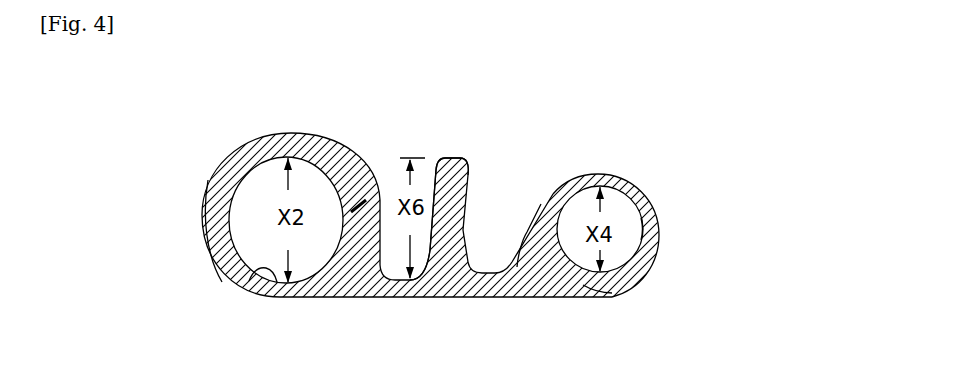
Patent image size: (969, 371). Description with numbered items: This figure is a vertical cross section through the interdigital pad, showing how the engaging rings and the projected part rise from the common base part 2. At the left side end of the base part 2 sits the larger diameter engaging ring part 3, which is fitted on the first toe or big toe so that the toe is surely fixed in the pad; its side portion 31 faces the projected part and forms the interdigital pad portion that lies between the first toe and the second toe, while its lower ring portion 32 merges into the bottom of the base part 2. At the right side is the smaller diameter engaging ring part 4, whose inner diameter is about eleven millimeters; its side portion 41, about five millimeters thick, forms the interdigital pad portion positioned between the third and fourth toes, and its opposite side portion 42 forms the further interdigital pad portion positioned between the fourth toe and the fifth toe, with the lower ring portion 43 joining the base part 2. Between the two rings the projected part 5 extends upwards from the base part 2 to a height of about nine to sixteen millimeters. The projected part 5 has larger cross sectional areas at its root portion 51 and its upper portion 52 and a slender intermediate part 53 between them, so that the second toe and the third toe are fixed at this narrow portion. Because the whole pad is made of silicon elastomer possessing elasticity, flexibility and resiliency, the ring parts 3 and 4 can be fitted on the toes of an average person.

The base part 2 is at (370, 296).
The larger diameter engaging ring part 3 is at (198, 185).
The side portion 31 is at (375, 192).
The lower ring portion 32 is at (283, 273).
The smaller diameter engaging ring part 4 is at (641, 188).
The side portion 41 is at (526, 236).
The opposite side portion 42 is at (632, 238).
The lower ring portion 43 is at (607, 287).
The projected part 5 is at (470, 186).
The root portion 51 is at (482, 298).
The upper portion 52 is at (455, 158).
The intermediate part 53 is at (442, 206).